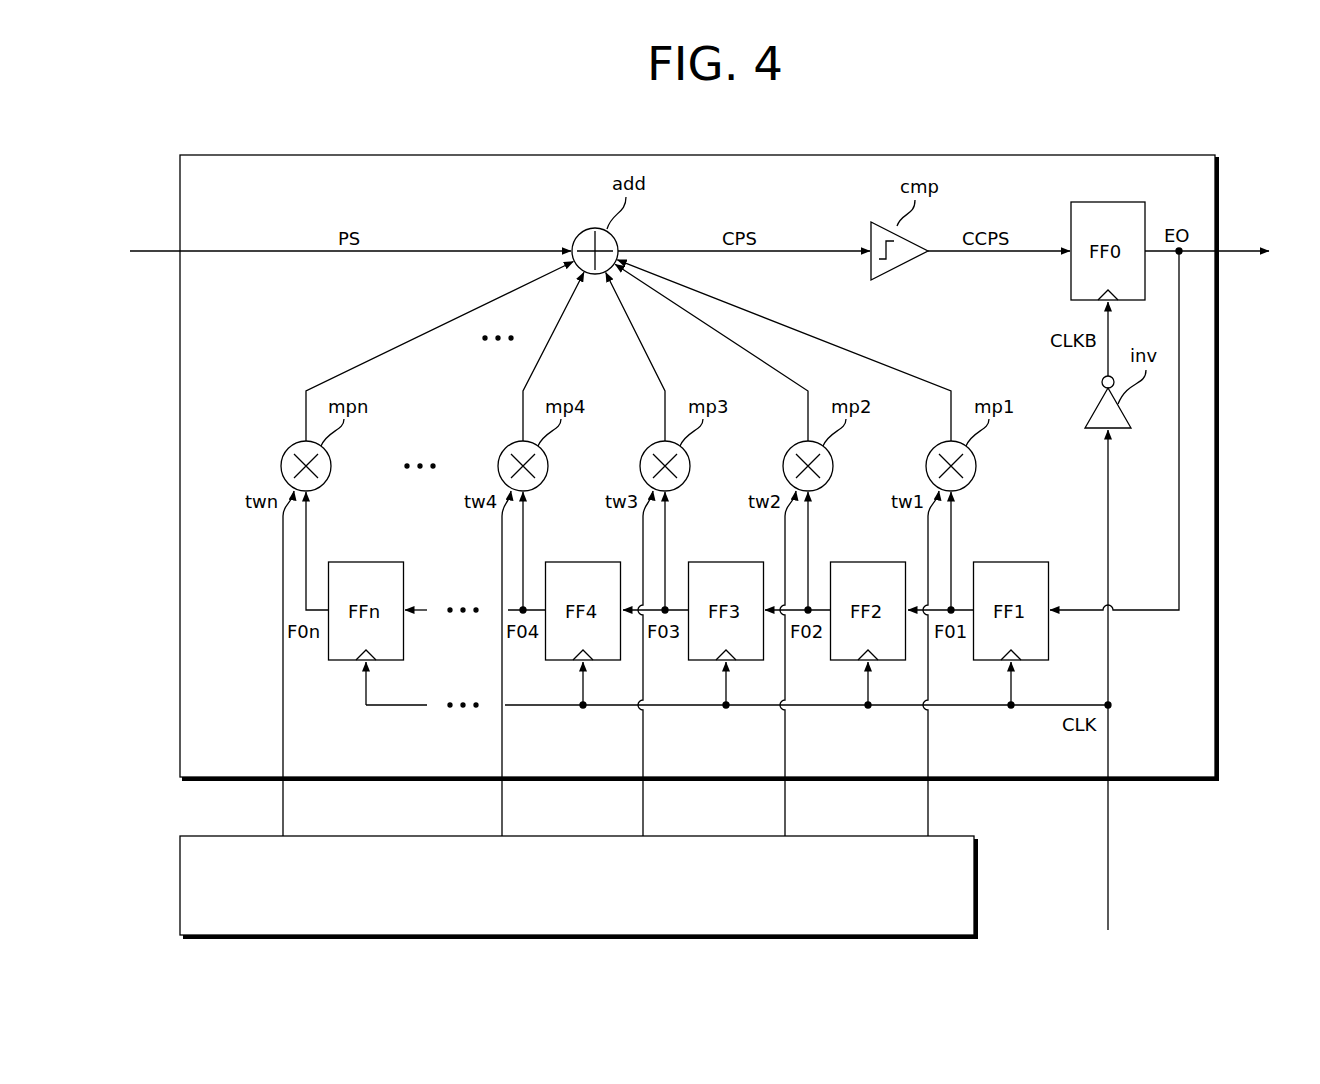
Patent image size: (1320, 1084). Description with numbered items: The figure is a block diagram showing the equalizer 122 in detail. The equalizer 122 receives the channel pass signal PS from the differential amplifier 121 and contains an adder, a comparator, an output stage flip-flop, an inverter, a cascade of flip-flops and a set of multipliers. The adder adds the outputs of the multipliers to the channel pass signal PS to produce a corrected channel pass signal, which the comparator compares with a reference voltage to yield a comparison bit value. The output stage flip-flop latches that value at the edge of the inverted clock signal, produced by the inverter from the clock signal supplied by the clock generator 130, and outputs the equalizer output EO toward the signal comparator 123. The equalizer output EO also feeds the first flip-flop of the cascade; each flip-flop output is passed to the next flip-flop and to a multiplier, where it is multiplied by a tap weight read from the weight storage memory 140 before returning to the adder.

The differential amplifier 121 is at (128, 263).
The equalizer 122 is at (1125, 155).
The signal comparator 123 is at (1314, 263).
The clock generator 130 is at (1128, 957).
The weight storage memory 140 is at (979, 882).